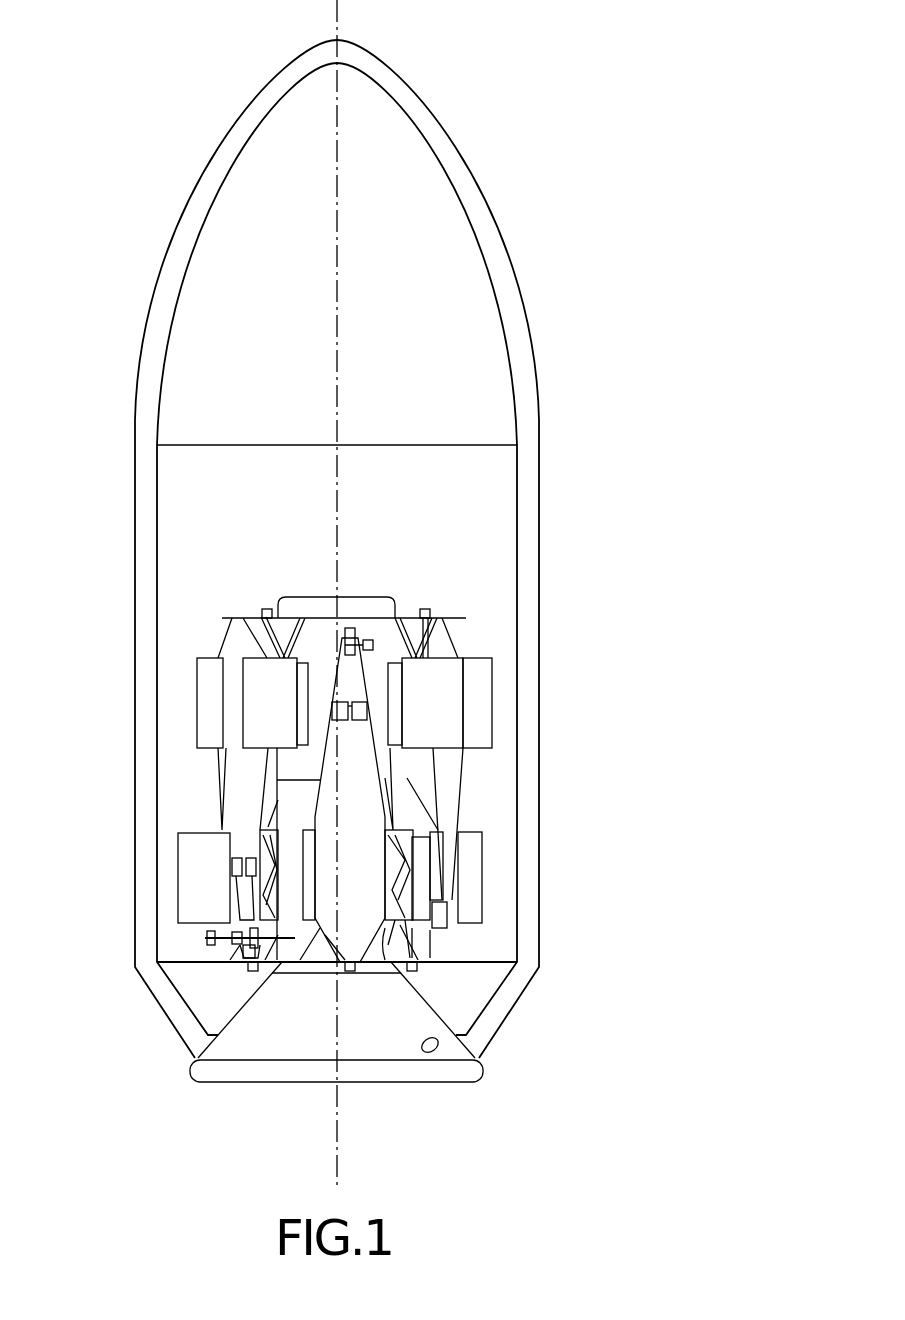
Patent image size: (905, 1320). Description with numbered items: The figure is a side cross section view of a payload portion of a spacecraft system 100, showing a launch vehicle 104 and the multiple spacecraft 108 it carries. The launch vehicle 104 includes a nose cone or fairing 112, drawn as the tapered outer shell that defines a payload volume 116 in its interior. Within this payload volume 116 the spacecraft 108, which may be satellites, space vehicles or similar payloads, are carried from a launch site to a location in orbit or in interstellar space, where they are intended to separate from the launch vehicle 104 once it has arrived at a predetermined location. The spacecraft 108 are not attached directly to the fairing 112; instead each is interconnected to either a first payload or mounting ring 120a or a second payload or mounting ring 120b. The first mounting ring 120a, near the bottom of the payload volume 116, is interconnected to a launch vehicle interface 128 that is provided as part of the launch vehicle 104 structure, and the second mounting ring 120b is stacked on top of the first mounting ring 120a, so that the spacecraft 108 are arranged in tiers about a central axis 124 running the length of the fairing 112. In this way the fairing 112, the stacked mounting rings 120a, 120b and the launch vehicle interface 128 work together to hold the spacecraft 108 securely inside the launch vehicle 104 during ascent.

The spacecraft system 100 is at (120, 88).
The launch vehicle 104 is at (424, 95).
The spacecraft 108 is at (240, 627).
The fairing 112 is at (521, 345).
The payload volume 116 is at (483, 481).
The first mounting ring 120a is at (288, 938).
The second mounting ring 120b is at (318, 598).
The longitudinal axis 124 is at (338, 183).
The launch vehicle interface 128 is at (431, 1010).